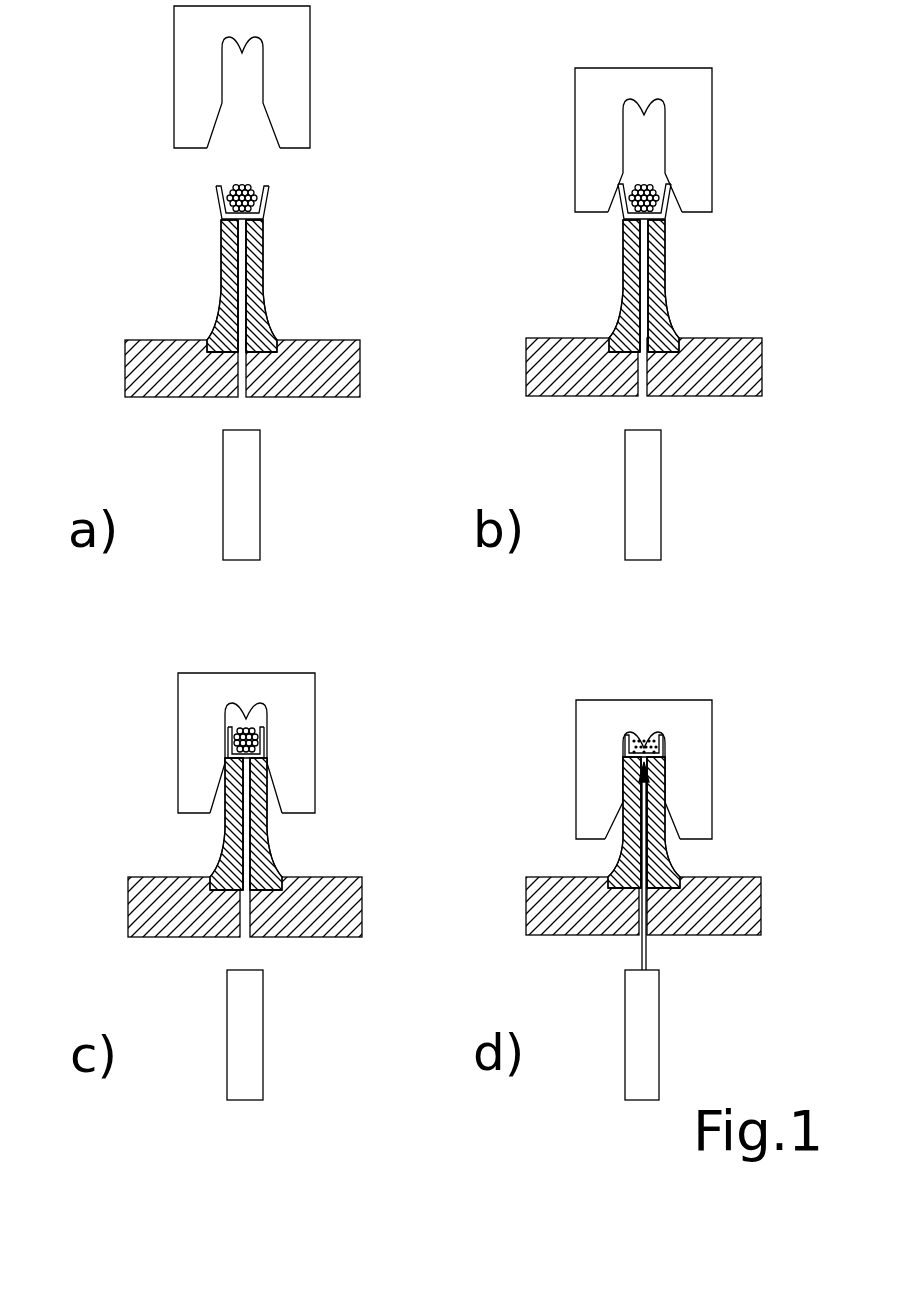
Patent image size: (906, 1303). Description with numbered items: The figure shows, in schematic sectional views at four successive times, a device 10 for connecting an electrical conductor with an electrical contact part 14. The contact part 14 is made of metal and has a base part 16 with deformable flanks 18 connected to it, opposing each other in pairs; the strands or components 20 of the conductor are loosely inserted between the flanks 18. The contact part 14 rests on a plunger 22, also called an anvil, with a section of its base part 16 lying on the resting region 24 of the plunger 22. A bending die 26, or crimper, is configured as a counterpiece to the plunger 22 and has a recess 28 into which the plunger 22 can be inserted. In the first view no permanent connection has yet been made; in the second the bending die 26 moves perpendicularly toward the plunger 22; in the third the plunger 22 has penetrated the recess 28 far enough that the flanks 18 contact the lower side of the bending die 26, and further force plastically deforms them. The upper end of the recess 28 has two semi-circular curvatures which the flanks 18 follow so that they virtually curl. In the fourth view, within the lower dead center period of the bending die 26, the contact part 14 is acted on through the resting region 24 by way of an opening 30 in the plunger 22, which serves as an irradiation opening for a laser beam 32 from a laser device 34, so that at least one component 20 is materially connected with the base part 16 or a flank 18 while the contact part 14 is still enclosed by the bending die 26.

The device 10 is at (82, 335).
The electrical contact part 14 is at (207, 218).
The base part 16 is at (262, 213).
The deformable flanks 18 is at (215, 190).
The component 20 is at (237, 187).
The plunger 22 is at (265, 326).
The resting region 24 is at (263, 230).
The bending die 26 is at (297, 84).
The recess 28 is at (227, 79).
The opening 30 is at (234, 331).
The laser beam 32 is at (645, 950).
The laser device 34 is at (250, 507).